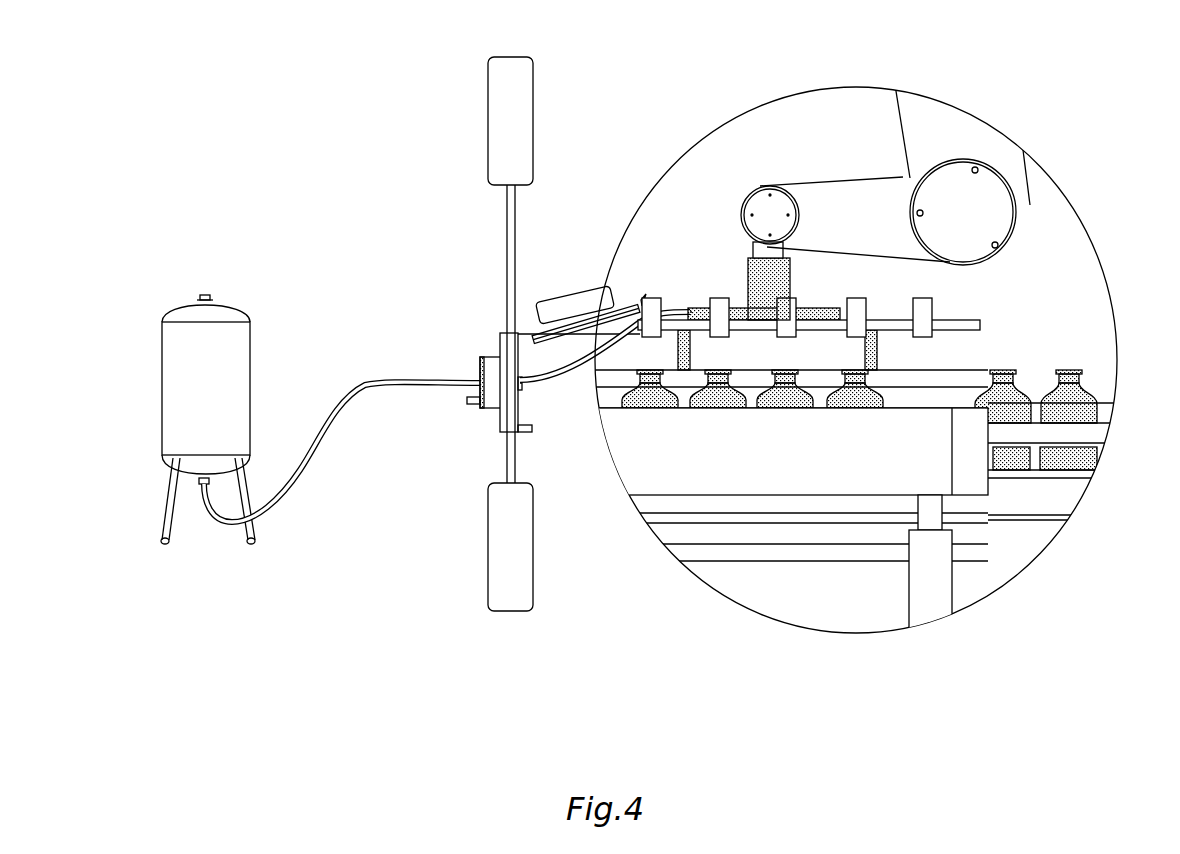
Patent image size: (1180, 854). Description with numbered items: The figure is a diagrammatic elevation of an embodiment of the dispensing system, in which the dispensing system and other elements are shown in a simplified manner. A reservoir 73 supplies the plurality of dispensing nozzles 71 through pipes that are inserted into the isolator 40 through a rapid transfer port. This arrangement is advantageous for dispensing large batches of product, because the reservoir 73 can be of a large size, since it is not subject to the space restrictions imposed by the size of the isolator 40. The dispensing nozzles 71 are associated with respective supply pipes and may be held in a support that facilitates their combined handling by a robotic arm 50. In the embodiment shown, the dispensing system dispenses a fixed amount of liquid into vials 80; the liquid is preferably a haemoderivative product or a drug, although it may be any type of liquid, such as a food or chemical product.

The reservoir 73 is at (162, 408).
The isolator 40 is at (507, 245).
The dispensing nozzles 71 is at (923, 297).
The vials 80 is at (1068, 368).
The robotic arm 50 is at (985, 150).